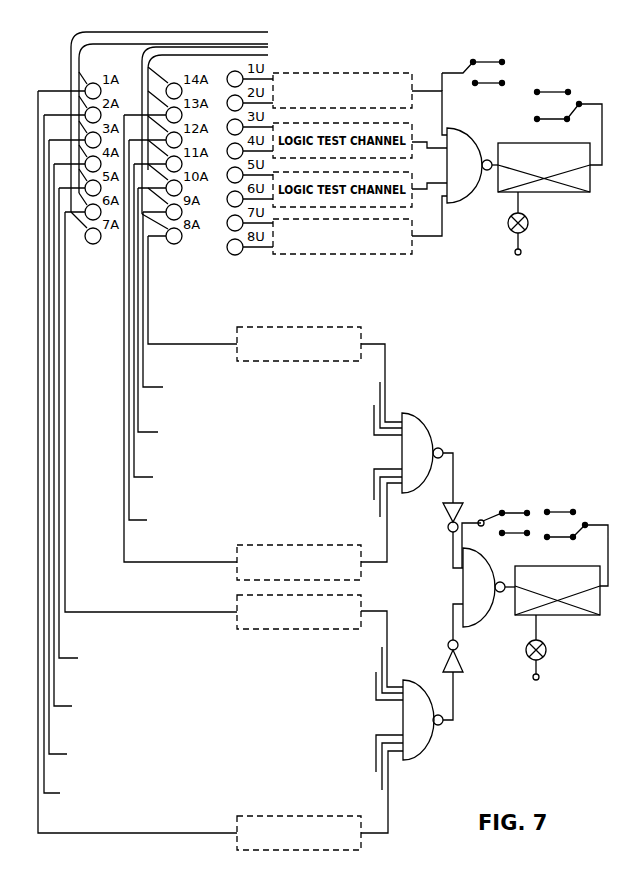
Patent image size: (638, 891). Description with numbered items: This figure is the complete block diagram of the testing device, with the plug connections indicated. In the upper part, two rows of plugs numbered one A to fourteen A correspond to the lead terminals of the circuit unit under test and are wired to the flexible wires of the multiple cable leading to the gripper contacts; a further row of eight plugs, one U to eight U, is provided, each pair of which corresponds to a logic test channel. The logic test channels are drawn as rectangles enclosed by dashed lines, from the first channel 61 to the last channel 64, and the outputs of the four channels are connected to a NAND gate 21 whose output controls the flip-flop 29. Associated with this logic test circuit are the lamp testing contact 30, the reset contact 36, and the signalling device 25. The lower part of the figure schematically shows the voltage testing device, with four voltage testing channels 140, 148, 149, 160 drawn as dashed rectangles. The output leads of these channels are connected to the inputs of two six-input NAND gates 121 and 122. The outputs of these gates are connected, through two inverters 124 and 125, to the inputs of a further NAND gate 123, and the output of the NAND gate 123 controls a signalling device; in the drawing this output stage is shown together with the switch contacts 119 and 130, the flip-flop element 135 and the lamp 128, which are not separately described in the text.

The logic test channel 61 is at (362, 74).
The logic test channel 64 is at (398, 254).
The lamp testing contact 30 is at (484, 73).
The reset contact 36 is at (561, 126).
The NAND gate 21 is at (472, 191).
The flip-flop 29 is at (580, 192).
The signalling device 25 is at (526, 229).
The voltage testing channel 140 is at (334, 318).
The NAND gate 121 is at (428, 414).
The inverter 124 is at (446, 507).
The switch 119 is at (499, 529).
The switch 130 is at (573, 541).
The NAND gate 123 is at (487, 613).
The relay 135 is at (586, 615).
The indicator lamp 128 is at (544, 652).
The inverter 125 is at (443, 661).
The voltage testing channel 148 is at (362, 566).
The voltage testing channel 149 is at (360, 606).
The NAND gate 122 is at (428, 738).
The voltage testing channel 160 is at (345, 853).